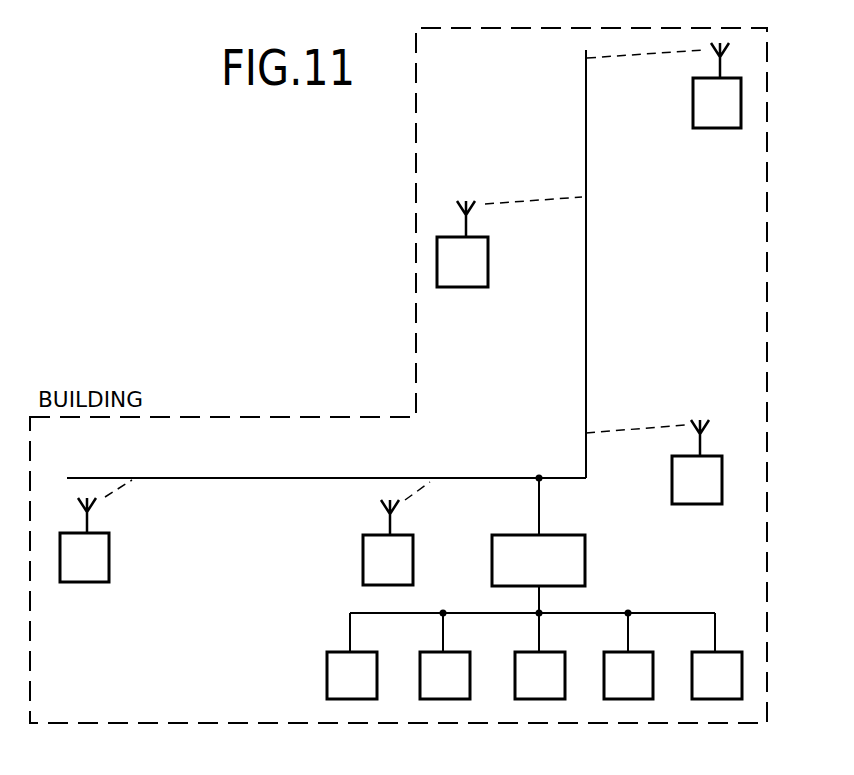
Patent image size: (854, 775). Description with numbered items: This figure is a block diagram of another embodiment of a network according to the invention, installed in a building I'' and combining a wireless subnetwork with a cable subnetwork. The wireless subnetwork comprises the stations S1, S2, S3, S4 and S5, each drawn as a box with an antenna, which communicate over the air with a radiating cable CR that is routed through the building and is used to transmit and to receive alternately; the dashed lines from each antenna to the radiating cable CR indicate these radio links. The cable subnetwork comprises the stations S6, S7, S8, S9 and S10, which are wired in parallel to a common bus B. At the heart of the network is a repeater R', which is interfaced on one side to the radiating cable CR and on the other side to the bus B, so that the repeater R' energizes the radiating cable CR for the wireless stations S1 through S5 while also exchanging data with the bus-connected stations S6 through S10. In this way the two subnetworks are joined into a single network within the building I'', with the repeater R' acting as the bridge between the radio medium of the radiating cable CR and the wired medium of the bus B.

The station S1 is at (97, 555).
The station S2 is at (402, 558).
The station S3 is at (693, 495).
The station S4 is at (457, 275).
The station S5 is at (705, 118).
The station S6 is at (340, 662).
The station S7 is at (433, 662).
The station S8 is at (530, 662).
The station S9 is at (620, 662).
The station S10 is at (707, 662).
The radiating cable CR is at (586, 310).
The repeater R' is at (562, 544).
The bus B is at (655, 613).
The building I'' is at (398, 398).